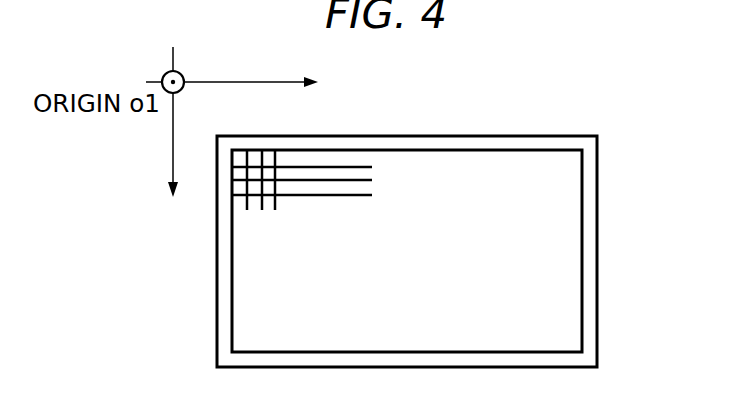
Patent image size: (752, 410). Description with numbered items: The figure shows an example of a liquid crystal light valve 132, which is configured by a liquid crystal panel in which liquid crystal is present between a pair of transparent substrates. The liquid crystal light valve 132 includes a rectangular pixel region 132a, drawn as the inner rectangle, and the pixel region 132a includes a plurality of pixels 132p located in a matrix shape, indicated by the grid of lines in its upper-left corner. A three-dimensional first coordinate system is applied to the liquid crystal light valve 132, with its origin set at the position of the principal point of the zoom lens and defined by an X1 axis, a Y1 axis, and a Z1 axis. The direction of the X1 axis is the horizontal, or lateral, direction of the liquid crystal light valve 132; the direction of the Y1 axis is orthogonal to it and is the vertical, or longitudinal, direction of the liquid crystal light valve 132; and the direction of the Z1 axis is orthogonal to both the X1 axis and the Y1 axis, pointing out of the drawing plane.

The liquid crystal light valve 132 is at (598, 162).
The pixel region 132a is at (447, 150).
The pixels 132p is at (240, 158).
The X1 axis X1 is at (270, 82).
The Y1 axis Y1 is at (178, 167).
The Z1 axis Z1 is at (161, 70).